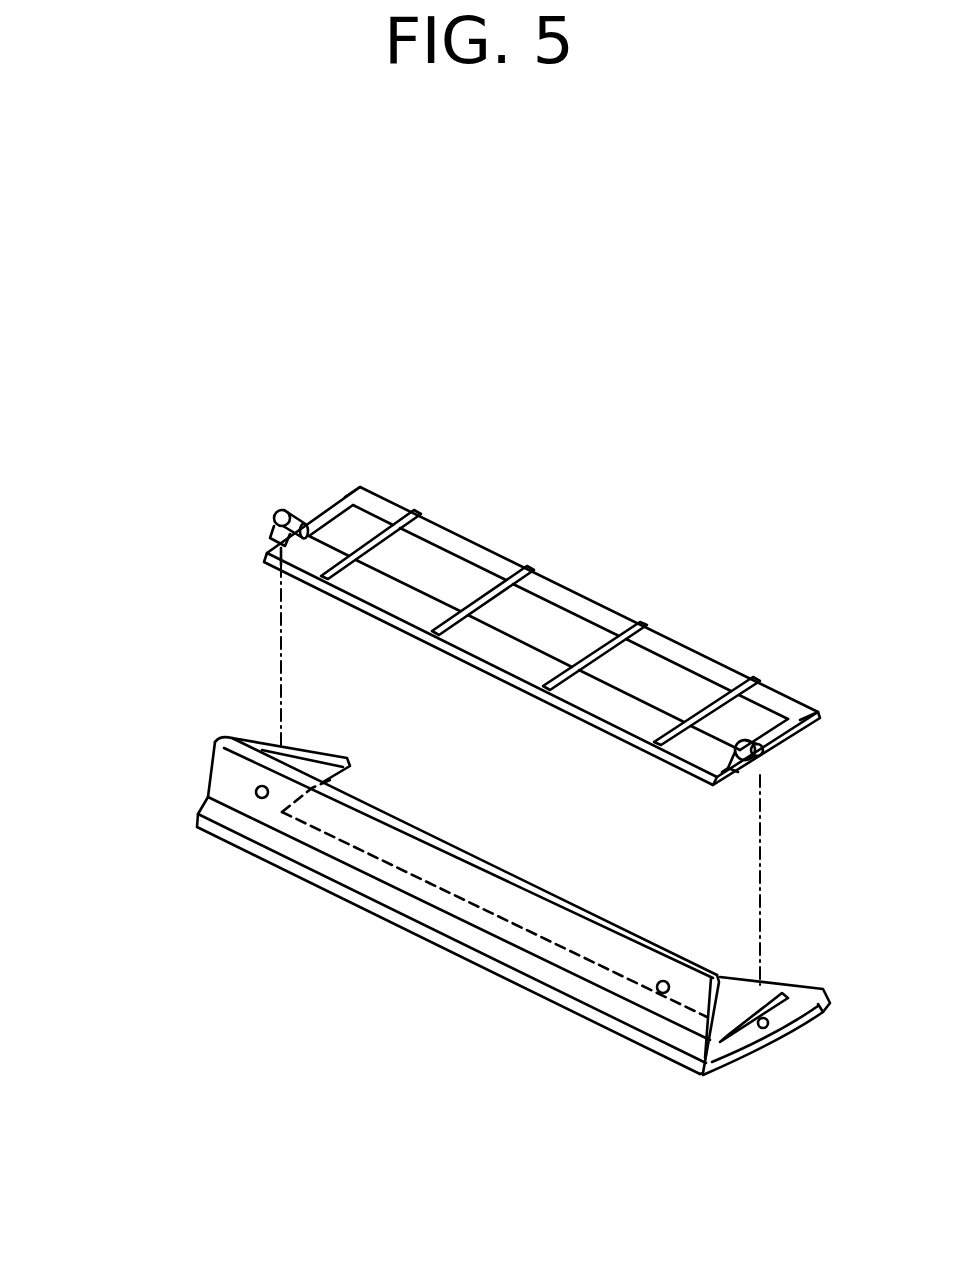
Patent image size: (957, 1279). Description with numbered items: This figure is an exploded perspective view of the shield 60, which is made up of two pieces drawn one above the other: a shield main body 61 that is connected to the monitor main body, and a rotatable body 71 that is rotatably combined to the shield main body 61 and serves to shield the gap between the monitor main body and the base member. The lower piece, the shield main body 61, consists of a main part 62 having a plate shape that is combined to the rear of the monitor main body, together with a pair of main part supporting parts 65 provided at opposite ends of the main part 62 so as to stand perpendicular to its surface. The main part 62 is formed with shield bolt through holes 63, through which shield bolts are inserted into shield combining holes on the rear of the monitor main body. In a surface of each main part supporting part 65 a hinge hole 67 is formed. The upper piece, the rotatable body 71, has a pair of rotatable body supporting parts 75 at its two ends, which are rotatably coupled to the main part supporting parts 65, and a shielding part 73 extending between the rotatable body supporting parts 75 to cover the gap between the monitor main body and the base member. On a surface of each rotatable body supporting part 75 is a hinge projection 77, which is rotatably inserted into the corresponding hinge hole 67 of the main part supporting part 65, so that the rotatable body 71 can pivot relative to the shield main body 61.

The shield 60 is at (102, 578).
The shield main body 61 is at (195, 743).
The main part 62 is at (548, 927).
The shield bolt through holes 63 is at (261, 798).
The main part supporting parts 65 is at (312, 752).
The hinge hole 67 is at (763, 1028).
The rotatable body 71 is at (254, 561).
The shielding part 73 is at (600, 600).
The rotatable body supporting parts 75 is at (342, 497).
The hinge projection 77 is at (277, 521).